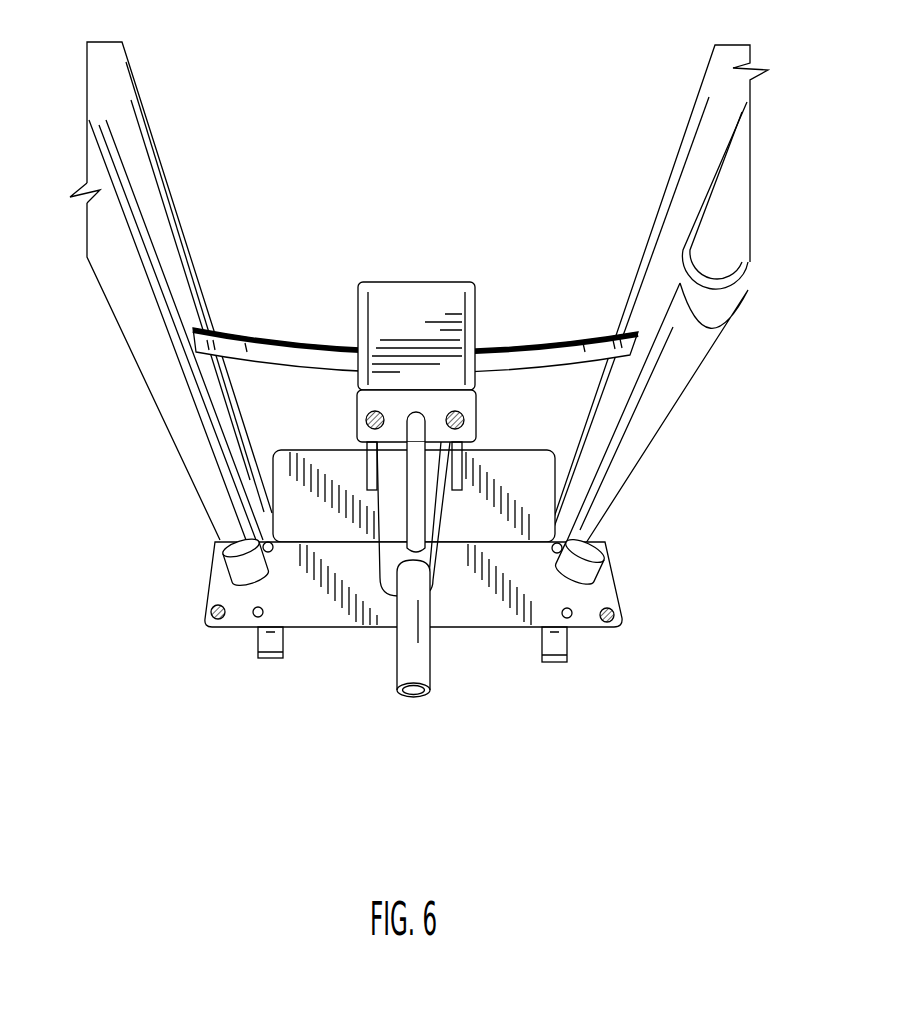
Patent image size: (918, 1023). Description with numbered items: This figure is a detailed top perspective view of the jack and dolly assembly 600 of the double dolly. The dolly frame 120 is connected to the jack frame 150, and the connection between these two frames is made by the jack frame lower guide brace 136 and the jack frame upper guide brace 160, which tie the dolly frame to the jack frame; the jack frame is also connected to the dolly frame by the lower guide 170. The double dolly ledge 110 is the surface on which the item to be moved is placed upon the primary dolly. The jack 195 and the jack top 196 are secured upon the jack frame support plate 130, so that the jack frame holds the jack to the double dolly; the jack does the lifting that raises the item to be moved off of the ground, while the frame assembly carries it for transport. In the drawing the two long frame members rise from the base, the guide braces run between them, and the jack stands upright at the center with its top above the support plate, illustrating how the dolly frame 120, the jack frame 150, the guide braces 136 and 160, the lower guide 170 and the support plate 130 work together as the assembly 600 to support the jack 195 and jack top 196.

The double dolly ledge 110 is at (508, 488).
The dolly frame 120 is at (186, 256).
The jack frame support plate 130 is at (487, 615).
The jack frame lower guide brace 136 is at (592, 490).
The jack frame 150 is at (210, 498).
The jack frame upper guide brace 160 is at (684, 275).
The lower guide 170 is at (240, 568).
The jack 195 is at (381, 503).
The jack top 196 is at (418, 307).
The jack and dolly assembly 600 is at (424, 445).